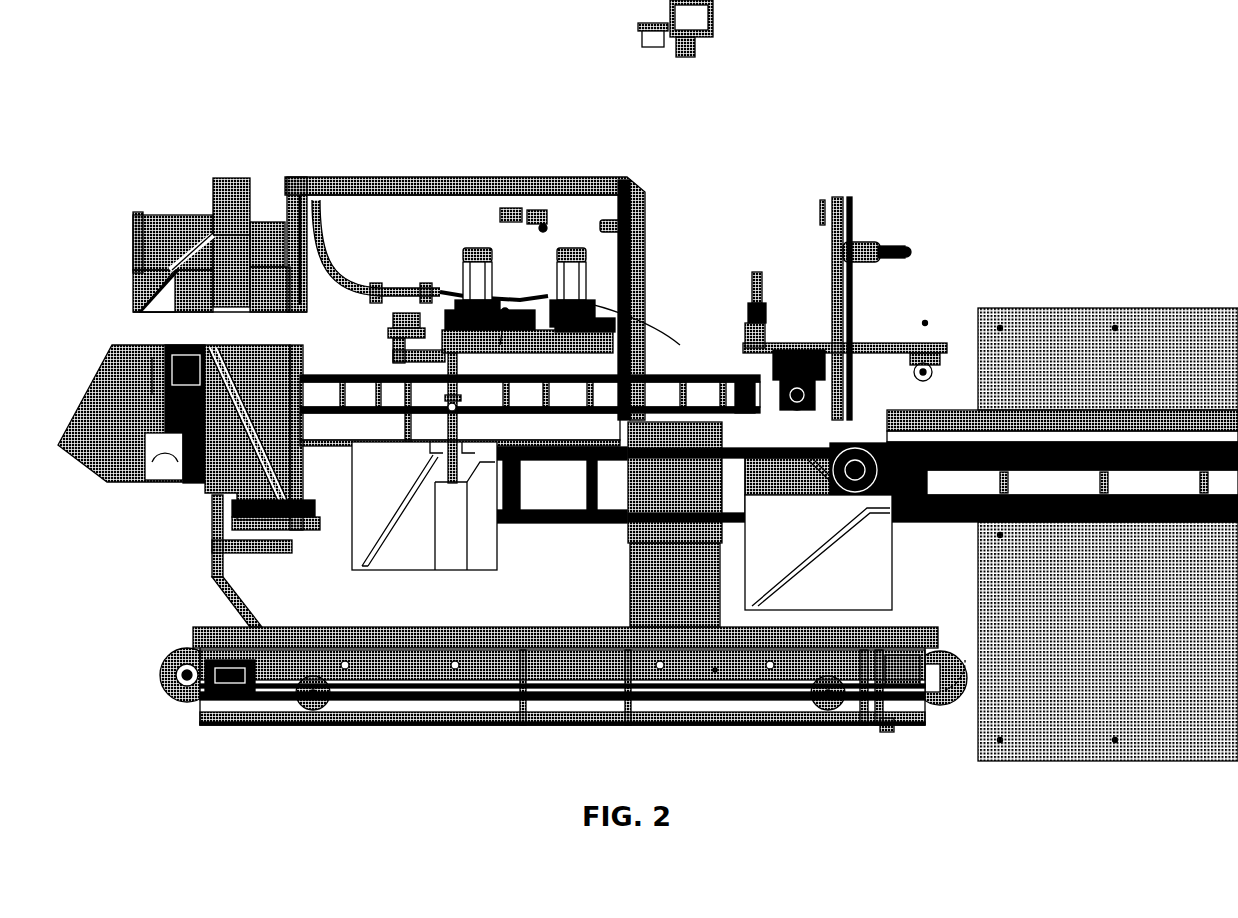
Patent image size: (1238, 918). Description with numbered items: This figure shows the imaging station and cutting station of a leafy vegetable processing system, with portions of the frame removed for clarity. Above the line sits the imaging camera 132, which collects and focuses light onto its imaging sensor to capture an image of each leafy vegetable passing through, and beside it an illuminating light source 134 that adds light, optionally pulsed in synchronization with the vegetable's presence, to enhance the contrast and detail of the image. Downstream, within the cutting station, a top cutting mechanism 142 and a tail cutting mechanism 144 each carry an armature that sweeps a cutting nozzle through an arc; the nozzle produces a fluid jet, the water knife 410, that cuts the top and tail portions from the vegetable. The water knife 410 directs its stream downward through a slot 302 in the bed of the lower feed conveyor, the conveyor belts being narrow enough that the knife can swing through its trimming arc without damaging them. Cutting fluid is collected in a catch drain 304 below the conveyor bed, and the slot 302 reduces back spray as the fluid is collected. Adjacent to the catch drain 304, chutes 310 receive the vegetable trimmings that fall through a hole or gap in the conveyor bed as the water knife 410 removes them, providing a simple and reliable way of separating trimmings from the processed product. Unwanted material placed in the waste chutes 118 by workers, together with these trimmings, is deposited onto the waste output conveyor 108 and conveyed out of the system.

The waste output conveyor 108 is at (735, 728).
The waste chute 118 is at (818, 552).
The imaging camera 132 is at (698, 42).
The illuminating light source 134 is at (656, 50).
The top cutting mechanism 142 is at (477, 245).
The tail cutting mechanism 144 is at (572, 245).
The slot 302 is at (452, 458).
The catch drain 304 is at (452, 572).
The chute 310 is at (424, 506).
The water knife 410 is at (450, 404).